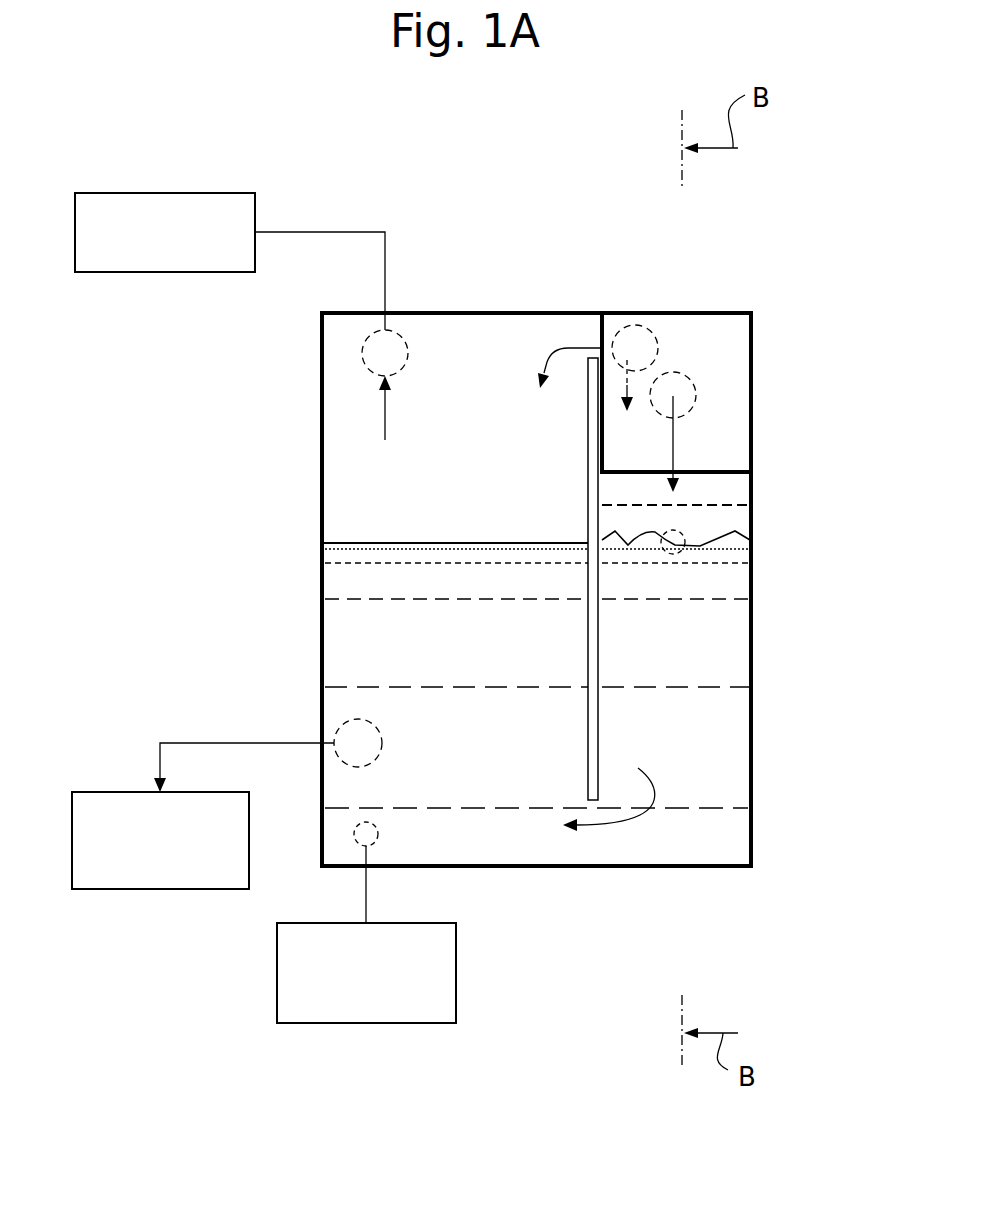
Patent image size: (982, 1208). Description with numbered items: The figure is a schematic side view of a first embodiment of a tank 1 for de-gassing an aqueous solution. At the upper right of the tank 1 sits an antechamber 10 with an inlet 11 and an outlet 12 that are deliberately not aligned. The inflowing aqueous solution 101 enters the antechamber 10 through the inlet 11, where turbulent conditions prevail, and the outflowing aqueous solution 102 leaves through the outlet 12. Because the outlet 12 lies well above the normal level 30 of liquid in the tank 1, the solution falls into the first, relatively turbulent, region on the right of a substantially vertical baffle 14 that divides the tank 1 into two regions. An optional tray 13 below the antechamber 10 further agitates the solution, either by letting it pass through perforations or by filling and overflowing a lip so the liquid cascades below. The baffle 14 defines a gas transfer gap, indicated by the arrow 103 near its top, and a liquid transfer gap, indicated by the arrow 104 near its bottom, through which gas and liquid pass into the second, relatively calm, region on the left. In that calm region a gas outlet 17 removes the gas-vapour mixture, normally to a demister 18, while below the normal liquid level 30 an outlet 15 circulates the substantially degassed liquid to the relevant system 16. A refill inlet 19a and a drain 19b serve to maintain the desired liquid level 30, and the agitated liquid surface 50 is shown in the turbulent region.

The tank 1 is at (512, 222).
The antechamber 10 is at (752, 330).
The inlet 11 is at (636, 325).
The outlet 12 is at (695, 386).
The tray 13 is at (752, 505).
The baffle 14 is at (599, 643).
The outlet 15 is at (335, 728).
The system 16 is at (130, 889).
The gas outlet 17 is at (362, 353).
The demister 18 is at (160, 193).
The refill inlet 19a is at (677, 553).
The drain 19b is at (378, 838).
The normal level of liquid 30 is at (340, 543).
The liquid surface 50 is at (750, 530).
The inflowing aqueous solution 101 is at (628, 387).
The outflowing aqueous solution 102 is at (673, 436).
The gas transfer gap arrow 103 is at (574, 348).
The liquid transfer gap arrow 104 is at (615, 822).